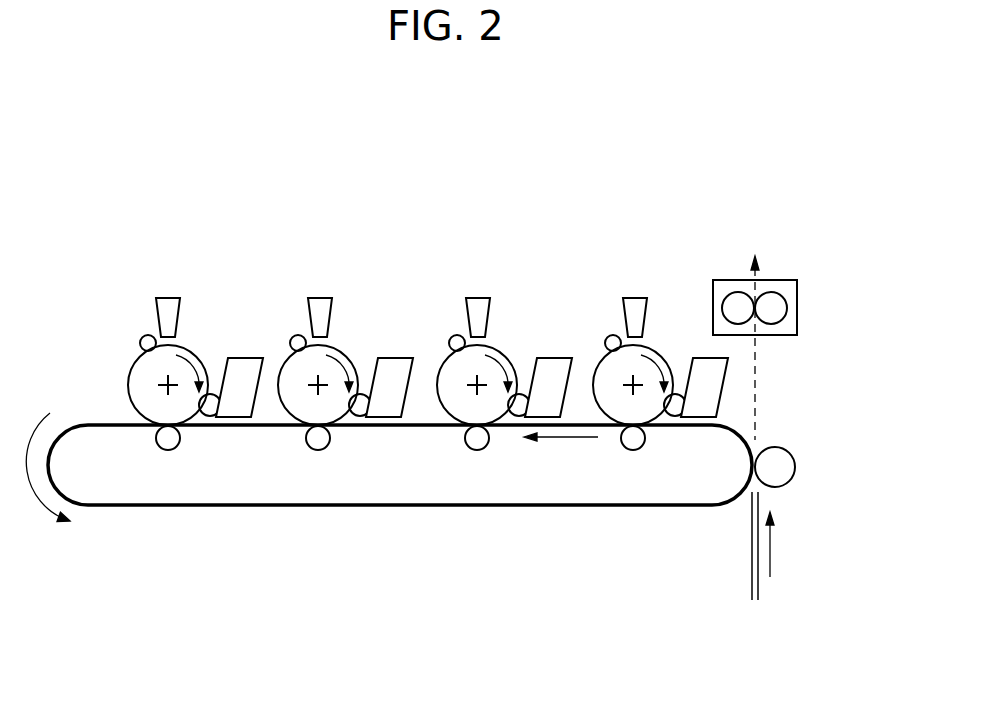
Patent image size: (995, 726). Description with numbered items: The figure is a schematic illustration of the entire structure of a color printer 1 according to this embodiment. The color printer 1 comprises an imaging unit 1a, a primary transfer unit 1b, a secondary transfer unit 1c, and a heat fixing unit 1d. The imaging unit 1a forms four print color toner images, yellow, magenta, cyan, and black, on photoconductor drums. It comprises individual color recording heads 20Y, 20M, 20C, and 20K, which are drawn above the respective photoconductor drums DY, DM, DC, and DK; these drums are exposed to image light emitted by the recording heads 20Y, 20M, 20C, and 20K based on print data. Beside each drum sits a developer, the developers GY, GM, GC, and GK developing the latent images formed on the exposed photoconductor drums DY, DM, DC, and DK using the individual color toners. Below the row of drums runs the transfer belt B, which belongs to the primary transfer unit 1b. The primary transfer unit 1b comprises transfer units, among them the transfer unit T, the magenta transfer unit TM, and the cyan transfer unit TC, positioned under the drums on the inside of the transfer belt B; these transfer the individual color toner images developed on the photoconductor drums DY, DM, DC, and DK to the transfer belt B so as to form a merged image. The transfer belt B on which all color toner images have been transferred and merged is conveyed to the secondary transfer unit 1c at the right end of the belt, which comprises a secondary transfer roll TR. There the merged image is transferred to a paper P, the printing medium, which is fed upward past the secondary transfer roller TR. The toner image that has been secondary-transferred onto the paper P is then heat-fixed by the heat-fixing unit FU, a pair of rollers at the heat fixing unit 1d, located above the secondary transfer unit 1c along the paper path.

The color printer 1 is at (563, 180).
The imaging unit 1a is at (442, 250).
The primary transfer unit 1b is at (403, 477).
The secondary transfer unit 1c is at (805, 473).
The heat fixing unit 1d is at (787, 267).
The black recording head 20K is at (173, 297).
The cyan recording head 20C is at (325, 297).
The magenta recording head 20M is at (482, 297).
The yellow recording head 20Y is at (630, 297).
The black photoconductor drum DK is at (140, 365).
The cyan photoconductor drum DC is at (292, 365).
The magenta photoconductor drum DM is at (450, 367).
The yellow photoconductor drum DY is at (607, 367).
The black developer GK is at (231, 387).
The cyan developer GC is at (381, 387).
The magenta developer GM is at (540, 387).
The yellow developer GY is at (696, 387).
The transfer unit T is at (177, 447).
The cyan transfer unit TC is at (327, 447).
The magenta transfer unit TM is at (486, 448).
The secondary transfer roll TR is at (783, 445).
The heat-fixing unit FU is at (793, 318).
The transfer belt B is at (260, 507).
The paper P is at (745, 533).